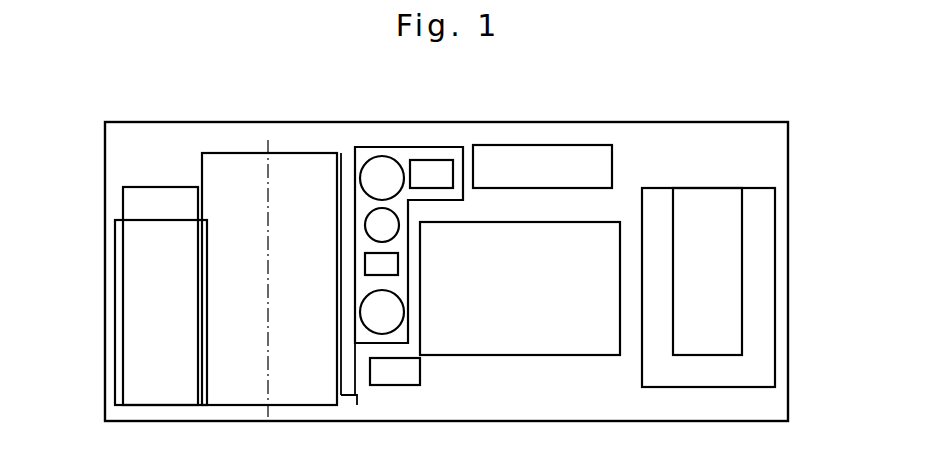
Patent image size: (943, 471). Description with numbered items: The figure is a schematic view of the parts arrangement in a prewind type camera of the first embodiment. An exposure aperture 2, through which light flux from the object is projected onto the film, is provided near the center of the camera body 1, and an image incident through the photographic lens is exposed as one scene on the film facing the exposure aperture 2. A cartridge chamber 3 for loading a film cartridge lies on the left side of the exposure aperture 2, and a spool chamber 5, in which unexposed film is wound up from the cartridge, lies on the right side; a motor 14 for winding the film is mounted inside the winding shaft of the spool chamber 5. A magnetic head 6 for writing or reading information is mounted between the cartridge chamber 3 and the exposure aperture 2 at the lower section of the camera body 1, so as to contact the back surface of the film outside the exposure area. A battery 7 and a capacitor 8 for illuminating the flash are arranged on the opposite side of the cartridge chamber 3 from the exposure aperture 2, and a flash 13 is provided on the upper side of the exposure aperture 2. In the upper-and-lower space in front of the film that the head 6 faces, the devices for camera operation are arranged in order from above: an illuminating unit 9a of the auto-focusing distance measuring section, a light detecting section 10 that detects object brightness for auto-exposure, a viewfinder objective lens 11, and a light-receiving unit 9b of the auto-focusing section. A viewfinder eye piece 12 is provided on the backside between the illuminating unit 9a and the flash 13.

The camera body 1 is at (760, 122).
The exposure aperture 2 is at (548, 350).
The cartridge chamber 3 is at (233, 153).
The spool chamber 5 is at (772, 228).
The magnetic head 6 is at (408, 382).
The battery 7 is at (120, 268).
The capacitor 8 is at (128, 200).
The illuminating unit of AF 9a is at (381, 170).
The light-receiving unit of AF 9b is at (382, 320).
The light detecting section 10 is at (370, 225).
The viewfinder objective lens 11 is at (365, 267).
The viewfinder eye piece 12 is at (440, 165).
The flash 13 is at (583, 150).
The motor 14 is at (690, 195).